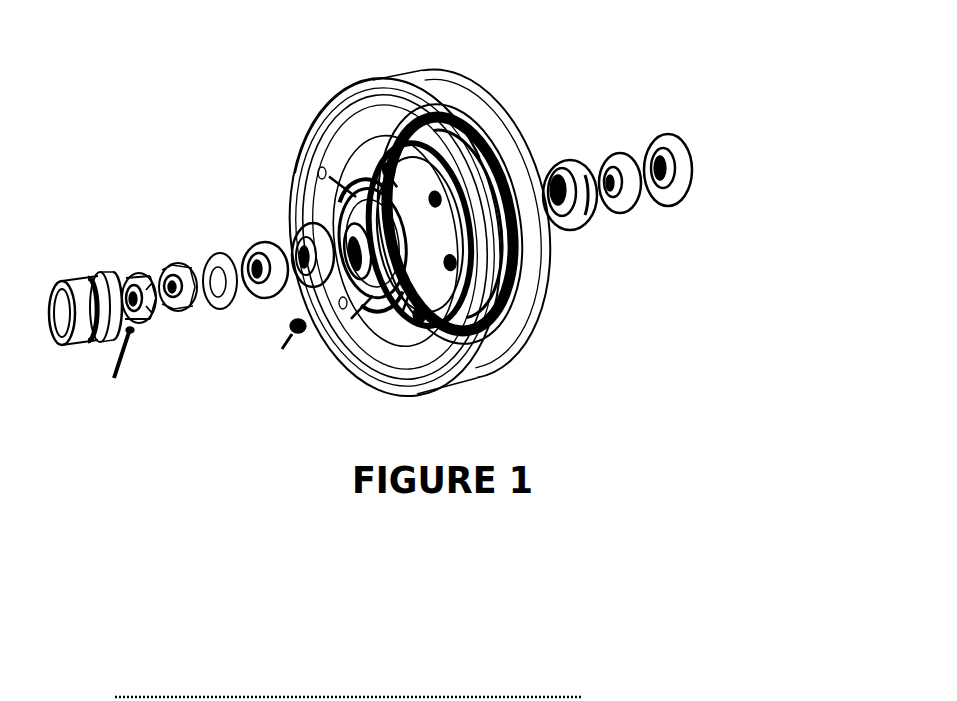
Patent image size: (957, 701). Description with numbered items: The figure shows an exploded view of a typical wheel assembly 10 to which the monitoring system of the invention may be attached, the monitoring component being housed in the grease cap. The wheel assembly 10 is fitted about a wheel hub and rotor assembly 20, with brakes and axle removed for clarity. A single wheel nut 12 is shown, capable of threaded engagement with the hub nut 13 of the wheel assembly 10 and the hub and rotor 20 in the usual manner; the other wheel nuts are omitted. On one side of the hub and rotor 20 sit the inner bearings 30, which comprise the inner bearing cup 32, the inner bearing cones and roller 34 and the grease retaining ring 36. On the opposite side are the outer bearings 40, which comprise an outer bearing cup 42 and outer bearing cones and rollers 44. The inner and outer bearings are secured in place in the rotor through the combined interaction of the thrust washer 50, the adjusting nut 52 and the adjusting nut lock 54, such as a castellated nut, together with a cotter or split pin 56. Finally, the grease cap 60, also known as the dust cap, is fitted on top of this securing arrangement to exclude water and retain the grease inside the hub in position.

The wheel assembly 10 is at (540, 329).
The wheel nut 12 is at (281, 350).
The hub nut 13 is at (392, 308).
The wheel hub and rotor assembly 20 is at (394, 131).
The inner bearings 30 is at (725, 133).
The inner bearing cup 32 is at (565, 152).
The inner bearing cones and roller 34 is at (628, 213).
The grease retaining ring 36 is at (665, 131).
The outer bearings 40 is at (255, 316).
The outer bearing cup 42 is at (292, 225).
The outer bearing cones and rollers 44 is at (246, 240).
The thrust washer 50 is at (227, 310).
The adjusting nut 52 is at (163, 262).
The adjusting nut lock 54 is at (153, 317).
The cotter or split pin 56 is at (108, 373).
The grease cap 60 is at (82, 275).